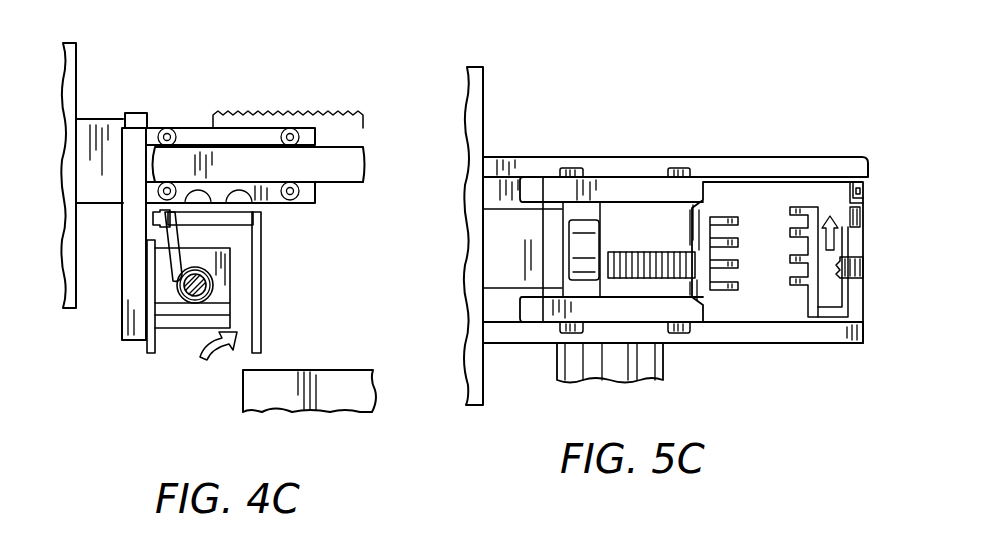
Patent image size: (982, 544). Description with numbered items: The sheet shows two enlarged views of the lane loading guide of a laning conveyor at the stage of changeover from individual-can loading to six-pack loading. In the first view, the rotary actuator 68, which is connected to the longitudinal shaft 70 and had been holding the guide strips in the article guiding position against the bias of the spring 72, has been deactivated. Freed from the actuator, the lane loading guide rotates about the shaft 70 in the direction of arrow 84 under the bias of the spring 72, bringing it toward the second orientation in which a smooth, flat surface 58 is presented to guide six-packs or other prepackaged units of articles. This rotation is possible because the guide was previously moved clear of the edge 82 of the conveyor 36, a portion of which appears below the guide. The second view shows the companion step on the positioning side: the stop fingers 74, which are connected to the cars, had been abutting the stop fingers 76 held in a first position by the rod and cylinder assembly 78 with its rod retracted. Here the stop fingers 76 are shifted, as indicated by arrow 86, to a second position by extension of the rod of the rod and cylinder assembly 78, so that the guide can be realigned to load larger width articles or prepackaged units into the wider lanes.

In FIG. 4C, the conveyor 36 is at (328, 398).
In FIG. 4C, the smooth, flat surface 58 is at (262, 298).
In FIG. 4C, the rotary actuator 68 is at (222, 262).
In FIG. 4C, the longitudinal shaft 70 is at (193, 292).
In FIG. 4C, the spring 72 is at (177, 278).
In FIG. 5C, the stop fingers 74 is at (732, 217).
In FIG. 5C, the stop fingers 76 is at (820, 217).
In FIG. 5C, the rod and cylinder assembly 78 is at (862, 240).
In FIG. 4C, the edge 82 is at (243, 372).
In FIG. 4C, the arrow 84 is at (204, 366).
In FIG. 5C, the arrow 86 is at (860, 135).